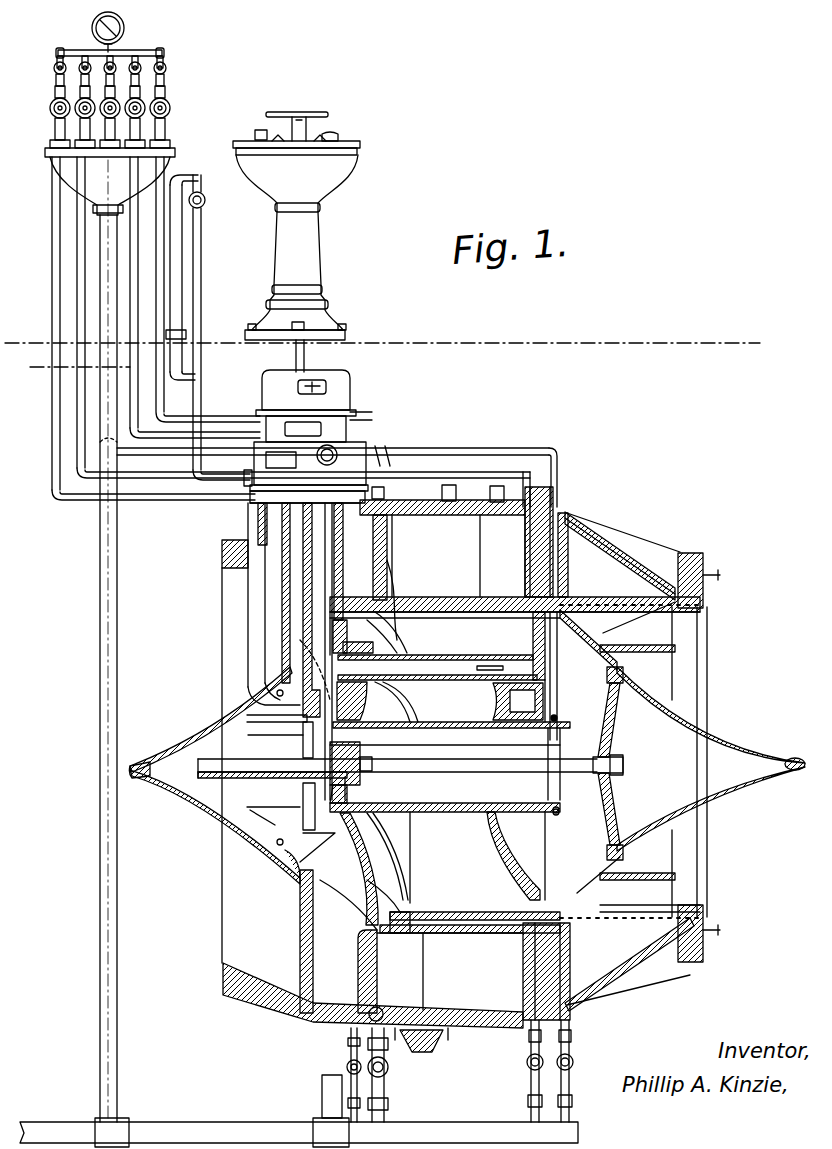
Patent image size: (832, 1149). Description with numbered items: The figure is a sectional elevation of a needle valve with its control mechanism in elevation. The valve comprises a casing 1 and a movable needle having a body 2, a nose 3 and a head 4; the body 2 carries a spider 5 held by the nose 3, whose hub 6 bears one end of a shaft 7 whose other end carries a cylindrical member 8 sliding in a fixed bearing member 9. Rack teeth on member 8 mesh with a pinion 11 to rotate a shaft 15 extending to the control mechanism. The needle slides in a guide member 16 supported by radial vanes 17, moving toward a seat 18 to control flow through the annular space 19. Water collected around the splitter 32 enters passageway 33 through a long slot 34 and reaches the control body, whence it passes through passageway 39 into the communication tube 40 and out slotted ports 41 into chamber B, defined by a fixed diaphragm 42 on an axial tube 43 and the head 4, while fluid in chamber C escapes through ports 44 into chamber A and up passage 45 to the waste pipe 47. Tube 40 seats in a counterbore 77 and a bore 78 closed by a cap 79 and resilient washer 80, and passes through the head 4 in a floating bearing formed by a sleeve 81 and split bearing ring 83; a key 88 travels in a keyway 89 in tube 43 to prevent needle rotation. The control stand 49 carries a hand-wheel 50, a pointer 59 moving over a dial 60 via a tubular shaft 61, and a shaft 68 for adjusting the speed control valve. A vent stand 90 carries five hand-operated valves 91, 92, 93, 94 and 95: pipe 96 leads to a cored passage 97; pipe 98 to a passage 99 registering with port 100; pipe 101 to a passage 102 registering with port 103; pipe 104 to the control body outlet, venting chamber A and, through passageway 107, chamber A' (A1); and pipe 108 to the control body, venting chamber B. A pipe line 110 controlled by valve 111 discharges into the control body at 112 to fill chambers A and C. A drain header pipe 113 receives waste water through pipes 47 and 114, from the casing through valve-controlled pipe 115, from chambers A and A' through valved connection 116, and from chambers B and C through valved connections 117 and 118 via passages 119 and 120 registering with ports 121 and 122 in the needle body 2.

The casing 1 is at (272, 1000).
The body 2 is at (500, 912).
The nose 3 is at (330, 745).
The head 4 is at (355, 870).
The spider 5 is at (612, 780).
The hub 6 is at (610, 755).
The shaft 7 is at (458, 757).
The cylindrical member 8 is at (245, 780).
The fixed bearing member 9 is at (303, 745).
The pinion 11 is at (352, 760).
The shaft 15 is at (340, 600).
The cylindrical guide member 16 is at (470, 935).
The radial vanes 17 is at (600, 610).
The seat 18 is at (690, 612).
The annular space 19 is at (535, 525).
The splitter 32 is at (175, 795).
The passageway 33 is at (270, 655).
The slot 34 is at (255, 637).
The passageway 39 is at (380, 552).
The communication tube 40 is at (440, 650).
The slotted port 41 is at (488, 668).
The diaphragm 42 is at (500, 845).
The axial tube 43 is at (432, 815).
The ports 44 is at (372, 772).
The passage 45 is at (400, 520).
The waste pipe 47 is at (365, 418).
The control stand 49 is at (310, 247).
The hand-wheel 50 is at (330, 110).
The pointer 59 is at (335, 134).
The dial 60 is at (352, 142).
The tubular shaft 61 is at (292, 356).
The shaft 68 is at (258, 130).
The counterbore 77 is at (300, 660).
The bore 78 is at (495, 700).
The cap 79 is at (548, 680).
The resilient washer 80 is at (548, 660).
The sleeve 81 is at (348, 632).
The split bearing ring 83 is at (367, 700).
The key 88 is at (298, 860).
The keyway 89 is at (452, 812).
The vent stand 90 is at (95, 172).
The valve 91 is at (60, 110).
The valve 92 is at (83, 112).
The valve 93 is at (115, 103).
The valve 94 is at (142, 108).
The valve 95 is at (170, 112).
The pipe 96 is at (195, 497).
The cored passage 97 is at (380, 524).
The pipe 98 is at (160, 477).
The passage 99 is at (560, 545).
The port 100 is at (415, 598).
The pipe 101 is at (100, 450).
The passage 102 is at (560, 575).
The port 103 is at (460, 600).
The pipe 104 is at (140, 276).
The passageway 107 is at (290, 572).
The pipe 108 is at (180, 245).
The pipe line 110 is at (70, 368).
The valve 111 is at (205, 202).
The discharge point 112 is at (245, 490).
The drain header pipe 113 is at (475, 1128).
The pipe 114 is at (100, 855).
The valve-controlled pipe 115 is at (385, 1080).
The valved connection 116 is at (348, 1068).
The valved connection 117 is at (530, 1080).
The valved connection 118 is at (570, 1080).
The passage 119 is at (530, 975).
The passage 120 is at (572, 960).
The port 121 is at (390, 920).
The port 122 is at (440, 895).
The chamber A is at (345, 635).
The chamber A' A1 is at (270, 735).
The chamber B is at (455, 871).
The chamber C is at (569, 764).